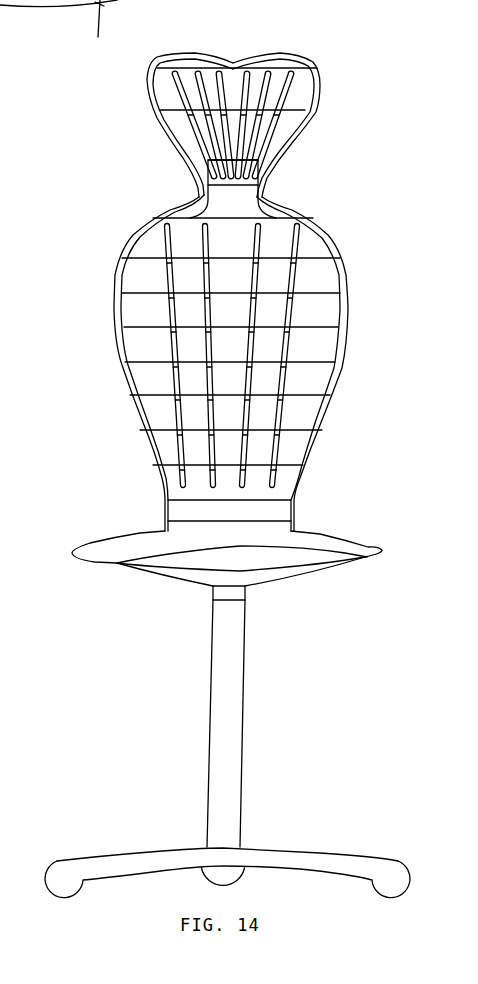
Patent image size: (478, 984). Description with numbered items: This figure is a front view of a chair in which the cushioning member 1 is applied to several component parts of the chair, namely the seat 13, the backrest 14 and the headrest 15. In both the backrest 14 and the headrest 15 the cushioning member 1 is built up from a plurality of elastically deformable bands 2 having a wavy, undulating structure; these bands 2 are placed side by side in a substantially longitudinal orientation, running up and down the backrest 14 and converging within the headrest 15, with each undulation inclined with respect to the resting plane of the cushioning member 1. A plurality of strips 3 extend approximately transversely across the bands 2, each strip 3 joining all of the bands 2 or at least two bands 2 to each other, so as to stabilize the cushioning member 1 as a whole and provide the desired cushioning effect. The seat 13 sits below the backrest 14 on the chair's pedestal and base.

The cushioning member 1 is at (324, 66).
The elastically deformable bands 2 is at (285, 129).
The strips 3 is at (292, 105).
The seat 13 is at (58, 28).
The backrest 14 is at (127, 322).
The headrest 15 is at (147, 96).